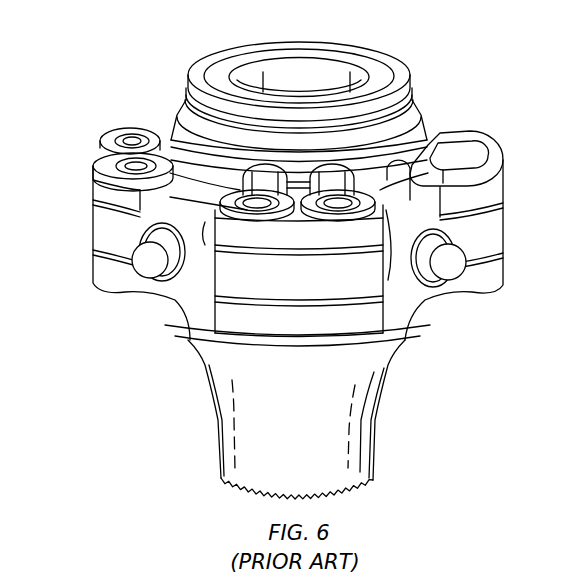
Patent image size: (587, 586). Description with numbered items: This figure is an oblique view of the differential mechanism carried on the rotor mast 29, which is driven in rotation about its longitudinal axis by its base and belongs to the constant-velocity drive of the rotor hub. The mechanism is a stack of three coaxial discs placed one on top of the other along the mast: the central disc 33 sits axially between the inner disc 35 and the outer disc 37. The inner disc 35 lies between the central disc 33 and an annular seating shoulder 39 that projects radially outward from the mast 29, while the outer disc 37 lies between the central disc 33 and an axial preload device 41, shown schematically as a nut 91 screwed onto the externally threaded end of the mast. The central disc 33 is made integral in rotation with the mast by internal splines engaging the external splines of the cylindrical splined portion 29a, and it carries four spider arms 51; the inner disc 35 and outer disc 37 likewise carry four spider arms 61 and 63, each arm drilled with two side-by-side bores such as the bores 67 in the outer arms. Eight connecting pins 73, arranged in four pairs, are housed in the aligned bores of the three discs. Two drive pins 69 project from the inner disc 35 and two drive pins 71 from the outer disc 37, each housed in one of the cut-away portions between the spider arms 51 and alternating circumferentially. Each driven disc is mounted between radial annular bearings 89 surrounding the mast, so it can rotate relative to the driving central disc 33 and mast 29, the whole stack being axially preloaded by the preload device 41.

The mast 29 is at (309, 453).
The cylindrical splined portion 29a is at (246, 66).
The central disc 33 is at (506, 231).
The inner disc 35 is at (90, 282).
The outer disc 37 is at (173, 110).
The seating shoulder 39 is at (390, 382).
The axial preload device 41 is at (420, 94).
The spider arms 51 is at (504, 218).
The spider arms 61 is at (93, 262).
The spider arms 63 is at (93, 178).
The bores 67 is at (476, 142).
The drive pins 69 is at (448, 268).
The drive pins 71 is at (150, 264).
The connecting pins 73 is at (258, 208).
The radial annular bearings 89 is at (422, 109).
The nut 91 is at (391, 80).